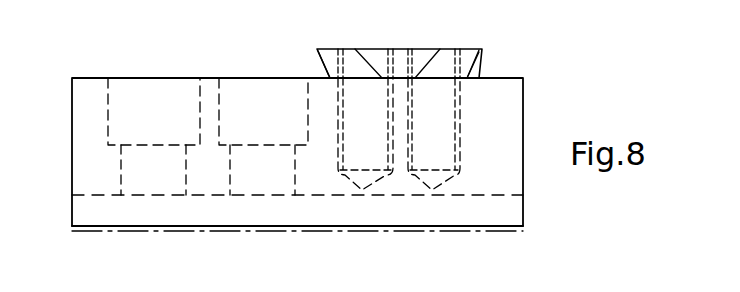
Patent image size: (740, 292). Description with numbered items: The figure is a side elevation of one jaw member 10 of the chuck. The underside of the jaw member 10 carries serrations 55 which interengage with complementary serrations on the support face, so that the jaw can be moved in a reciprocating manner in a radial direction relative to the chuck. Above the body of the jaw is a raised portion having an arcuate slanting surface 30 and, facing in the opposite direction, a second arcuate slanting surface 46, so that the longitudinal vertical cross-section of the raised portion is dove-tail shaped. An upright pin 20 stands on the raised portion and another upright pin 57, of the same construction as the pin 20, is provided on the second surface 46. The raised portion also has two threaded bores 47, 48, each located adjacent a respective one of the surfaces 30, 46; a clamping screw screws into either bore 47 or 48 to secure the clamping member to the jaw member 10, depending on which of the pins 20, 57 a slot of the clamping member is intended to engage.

The jaw member 10 is at (93, 76).
The upright pin 20 is at (480, 68).
The arcuate slanting surface 30 is at (483, 50).
The second arcuate slanting surface 46 is at (318, 49).
The threaded bore 47 is at (412, 58).
The threaded bore 48 is at (390, 58).
The serrations 55 is at (427, 232).
The upright pin 57 is at (318, 63).